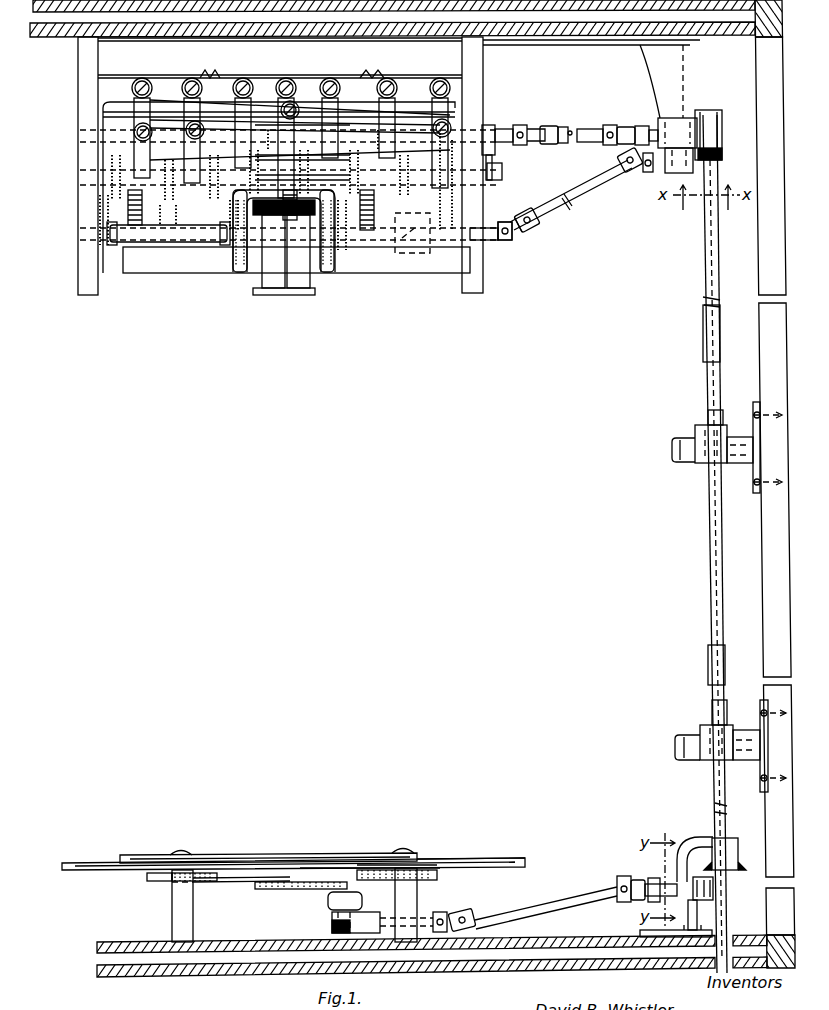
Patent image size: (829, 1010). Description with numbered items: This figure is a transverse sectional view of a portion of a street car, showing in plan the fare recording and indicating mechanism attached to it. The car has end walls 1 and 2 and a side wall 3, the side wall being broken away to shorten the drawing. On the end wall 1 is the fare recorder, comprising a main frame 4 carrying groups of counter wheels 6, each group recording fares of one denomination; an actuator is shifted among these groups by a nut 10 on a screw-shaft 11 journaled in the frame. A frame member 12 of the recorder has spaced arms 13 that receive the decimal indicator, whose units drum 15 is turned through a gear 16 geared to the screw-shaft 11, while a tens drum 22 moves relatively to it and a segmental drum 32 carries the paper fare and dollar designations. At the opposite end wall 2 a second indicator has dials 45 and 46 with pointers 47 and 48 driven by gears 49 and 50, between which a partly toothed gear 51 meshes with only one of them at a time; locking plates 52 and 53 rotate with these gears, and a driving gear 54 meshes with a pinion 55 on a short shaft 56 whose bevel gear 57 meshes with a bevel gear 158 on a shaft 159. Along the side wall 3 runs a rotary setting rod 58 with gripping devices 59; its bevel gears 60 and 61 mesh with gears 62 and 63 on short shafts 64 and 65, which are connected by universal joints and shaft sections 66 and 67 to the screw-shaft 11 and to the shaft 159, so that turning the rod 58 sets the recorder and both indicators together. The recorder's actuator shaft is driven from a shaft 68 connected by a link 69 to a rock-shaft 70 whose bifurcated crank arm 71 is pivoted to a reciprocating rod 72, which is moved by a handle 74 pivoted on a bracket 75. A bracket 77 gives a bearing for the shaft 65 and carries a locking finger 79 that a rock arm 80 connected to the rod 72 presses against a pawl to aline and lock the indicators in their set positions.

The end wall 1 is at (66, 36).
The end wall 2 is at (108, 942).
The side wall 3 is at (772, 528).
The main frame 4 is at (90, 190).
The counter wheels 6 is at (168, 222).
The nut 10 is at (408, 235).
The screw-shaft 11 is at (390, 230).
The frame member 12 is at (180, 265).
The arms 13 is at (243, 252).
The units drum 15 is at (305, 292).
The gear 16 is at (222, 258).
The tens drum 22 is at (272, 292).
The segmental drum 32 is at (305, 200).
The dial 45 is at (488, 858).
The dial 46 is at (105, 860).
The pointer 47 is at (335, 856).
The pointer 48 is at (225, 856).
The gear 49 is at (440, 873).
The gear 50 is at (147, 877).
The gear 51 is at (228, 873).
The locking plates 52 is at (160, 880).
The locking plate 53 is at (236, 880).
The driving gear 54 is at (278, 890).
The pinion 55 is at (330, 896).
The short shaft 56 is at (362, 912).
The bevel gear 57 is at (332, 918).
The rotary shaft or setting rod 58 is at (712, 580).
The hand pieces or gripping devices 59 is at (705, 335).
The bevel gear 60 is at (724, 150).
The bevel gear 61 is at (738, 870).
The gear 62 is at (675, 175).
The gear 63 is at (693, 905).
The short shaft 64 is at (655, 168).
The short shaft 65 is at (660, 880).
The shaft section 66 is at (585, 190).
The shaft section 67 is at (562, 905).
The shaft 68 is at (520, 130).
The link 69 is at (588, 128).
The rock-shaft 70 is at (658, 125).
The bifurcated crank arm 71 is at (718, 110).
The longitudinal reciprocating rod 72 is at (716, 272).
The handle 74 is at (672, 450).
The bracket 75 is at (740, 428).
The bracket 77 is at (660, 930).
The locking finger 79 is at (680, 860).
The rock arm 80 is at (713, 890).
The bevel gear 158 is at (336, 933).
The shaft 159 is at (430, 925).